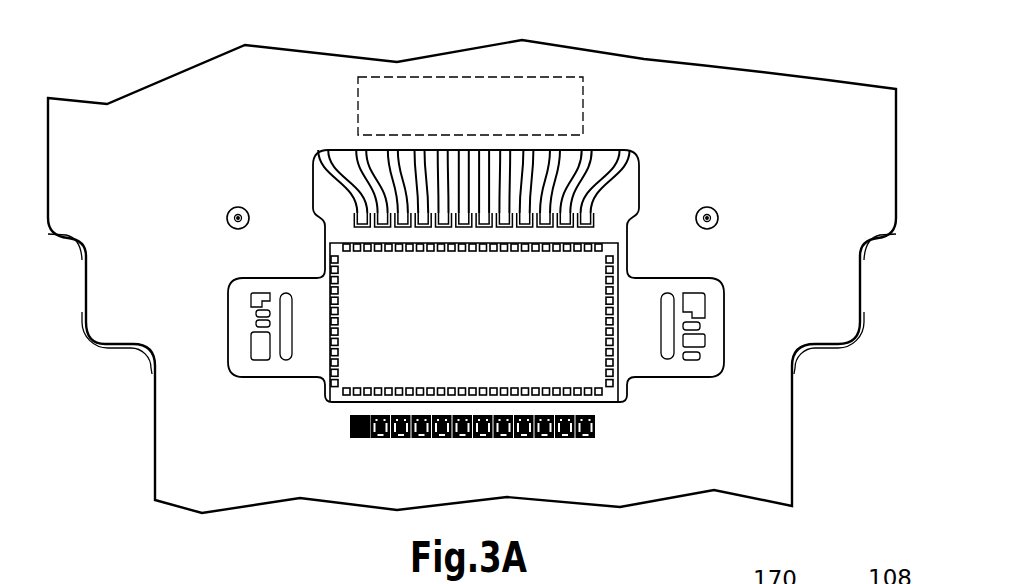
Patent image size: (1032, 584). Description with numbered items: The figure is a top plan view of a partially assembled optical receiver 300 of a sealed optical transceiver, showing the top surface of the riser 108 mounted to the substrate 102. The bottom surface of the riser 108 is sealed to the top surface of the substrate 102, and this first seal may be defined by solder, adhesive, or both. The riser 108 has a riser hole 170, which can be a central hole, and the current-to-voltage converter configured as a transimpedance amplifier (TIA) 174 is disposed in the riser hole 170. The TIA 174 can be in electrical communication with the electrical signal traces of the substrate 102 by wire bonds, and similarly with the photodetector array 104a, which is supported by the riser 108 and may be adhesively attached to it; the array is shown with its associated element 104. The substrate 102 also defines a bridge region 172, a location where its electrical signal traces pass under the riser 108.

The optical receiver 300 is at (177, 57).
The riser 108 is at (165, 155).
The substrate 102 is at (88, 345).
The bridge region 172 is at (482, 77).
The riser hole 170 is at (550, 225).
The transimpedance amplifier 174 is at (433, 300).
The connector contact strip 104 is at (498, 443).
The photodetector array 104a is at (350, 427).